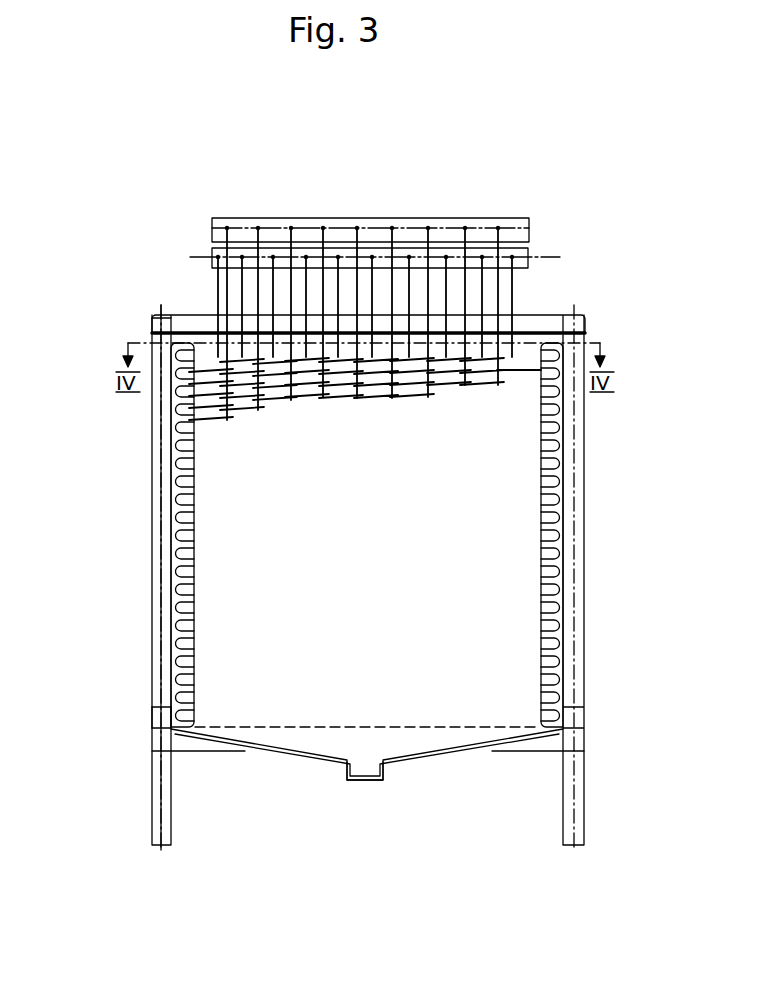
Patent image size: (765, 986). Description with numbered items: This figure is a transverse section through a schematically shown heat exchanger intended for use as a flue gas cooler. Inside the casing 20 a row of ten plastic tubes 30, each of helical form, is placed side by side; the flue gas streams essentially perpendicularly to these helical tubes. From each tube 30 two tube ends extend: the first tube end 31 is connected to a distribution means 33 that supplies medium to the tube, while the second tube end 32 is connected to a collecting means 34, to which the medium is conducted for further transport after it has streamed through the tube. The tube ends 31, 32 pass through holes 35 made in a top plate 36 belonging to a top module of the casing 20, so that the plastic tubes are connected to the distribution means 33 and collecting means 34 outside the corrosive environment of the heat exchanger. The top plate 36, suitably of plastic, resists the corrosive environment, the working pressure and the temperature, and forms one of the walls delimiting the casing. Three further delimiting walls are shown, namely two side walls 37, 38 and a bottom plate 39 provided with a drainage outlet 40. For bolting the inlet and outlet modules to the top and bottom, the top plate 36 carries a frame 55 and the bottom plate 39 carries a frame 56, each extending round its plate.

The casing 20 is at (150, 550).
The plastic tube 30 is at (226, 419).
The first tube end 31 is at (215, 297).
The second tube end 32 is at (227, 243).
The distribution means 33 is at (512, 257).
The collecting means 34 is at (497, 226).
The holes 35 is at (205, 316).
The top plate 36 is at (535, 333).
The side wall 37 is at (162, 618).
The side wall 38 is at (573, 533).
The bottom plate 39 is at (442, 751).
The drainage outlet 40 is at (365, 770).
The frame 55 is at (152, 318).
The frame 56 is at (163, 742).